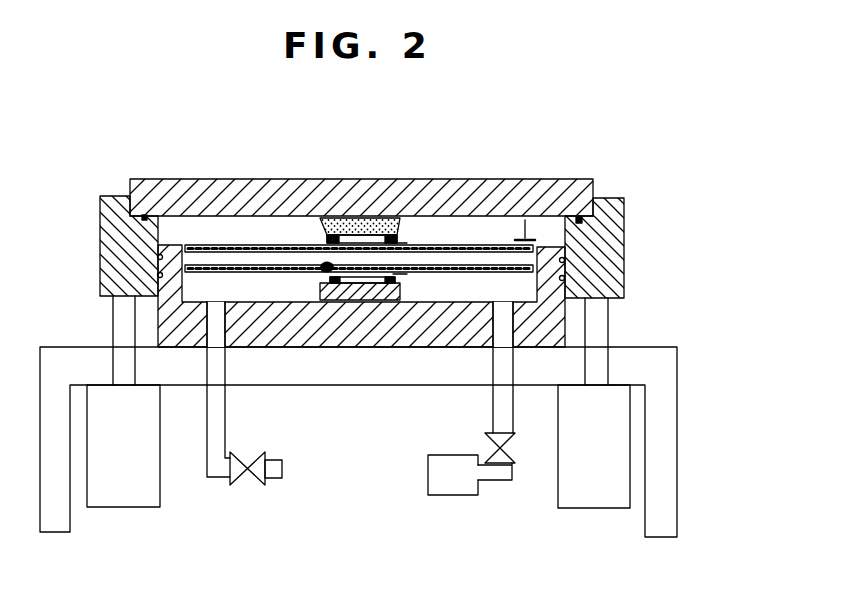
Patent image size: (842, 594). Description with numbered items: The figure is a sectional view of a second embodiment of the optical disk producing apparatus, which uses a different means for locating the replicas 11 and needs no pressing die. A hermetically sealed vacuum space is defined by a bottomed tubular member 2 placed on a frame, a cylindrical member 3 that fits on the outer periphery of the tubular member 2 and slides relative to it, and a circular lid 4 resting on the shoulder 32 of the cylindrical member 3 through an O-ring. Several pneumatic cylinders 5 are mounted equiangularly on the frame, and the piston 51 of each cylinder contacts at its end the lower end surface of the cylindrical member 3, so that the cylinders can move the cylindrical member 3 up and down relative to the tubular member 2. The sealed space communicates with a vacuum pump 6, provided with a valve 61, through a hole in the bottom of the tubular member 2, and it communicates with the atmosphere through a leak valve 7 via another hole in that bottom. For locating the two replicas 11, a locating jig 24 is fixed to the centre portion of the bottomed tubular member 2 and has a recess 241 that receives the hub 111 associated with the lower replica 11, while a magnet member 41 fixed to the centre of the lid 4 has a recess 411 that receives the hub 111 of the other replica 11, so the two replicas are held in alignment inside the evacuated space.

The bottomed tubular member 2 is at (451, 340).
The cylindrical member 3 is at (625, 232).
The shoulder 32 is at (574, 211).
The circular lid 4 is at (524, 179).
The magnet member 41 is at (350, 236).
The recess 411 is at (322, 222).
The pneumatic cylinders 5 is at (117, 507).
The piston 51 is at (112, 326).
The vacuum pump 6 is at (445, 496).
The valve 61 is at (510, 459).
The leak valve 7 is at (248, 486).
The replicas 11 is at (233, 265).
The hub 111 is at (393, 273).
The locating jig 24 is at (388, 292).
The recess 241 is at (324, 268).